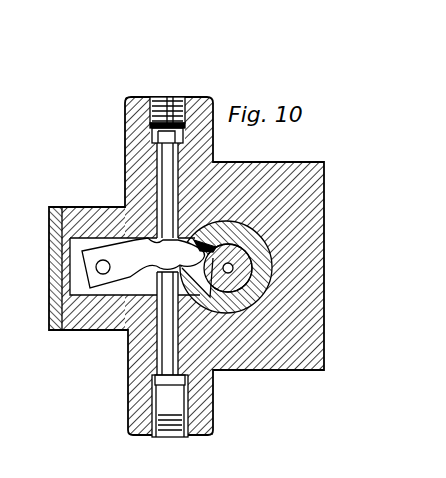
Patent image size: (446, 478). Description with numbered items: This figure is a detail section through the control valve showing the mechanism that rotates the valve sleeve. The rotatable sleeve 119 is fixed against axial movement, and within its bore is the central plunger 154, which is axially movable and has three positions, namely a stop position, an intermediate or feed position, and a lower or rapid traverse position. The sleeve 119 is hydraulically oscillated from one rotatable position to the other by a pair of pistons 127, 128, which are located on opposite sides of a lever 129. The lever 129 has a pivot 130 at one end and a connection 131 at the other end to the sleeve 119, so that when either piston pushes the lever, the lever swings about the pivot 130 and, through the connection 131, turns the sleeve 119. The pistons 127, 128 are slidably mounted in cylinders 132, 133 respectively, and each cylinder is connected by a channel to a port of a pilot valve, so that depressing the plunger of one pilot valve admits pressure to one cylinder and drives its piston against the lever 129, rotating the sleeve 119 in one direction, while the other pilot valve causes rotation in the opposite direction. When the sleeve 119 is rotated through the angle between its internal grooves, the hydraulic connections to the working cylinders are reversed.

The rotatable sleeve 119 is at (248, 303).
The piston 127 is at (170, 350).
The piston 128 is at (168, 157).
The lever 129 is at (113, 238).
The pivot 130 is at (88, 252).
The connection 131 is at (196, 240).
The cylinder 132 is at (165, 398).
The cylinder 133 is at (168, 97).
The central plunger 154 is at (242, 265).